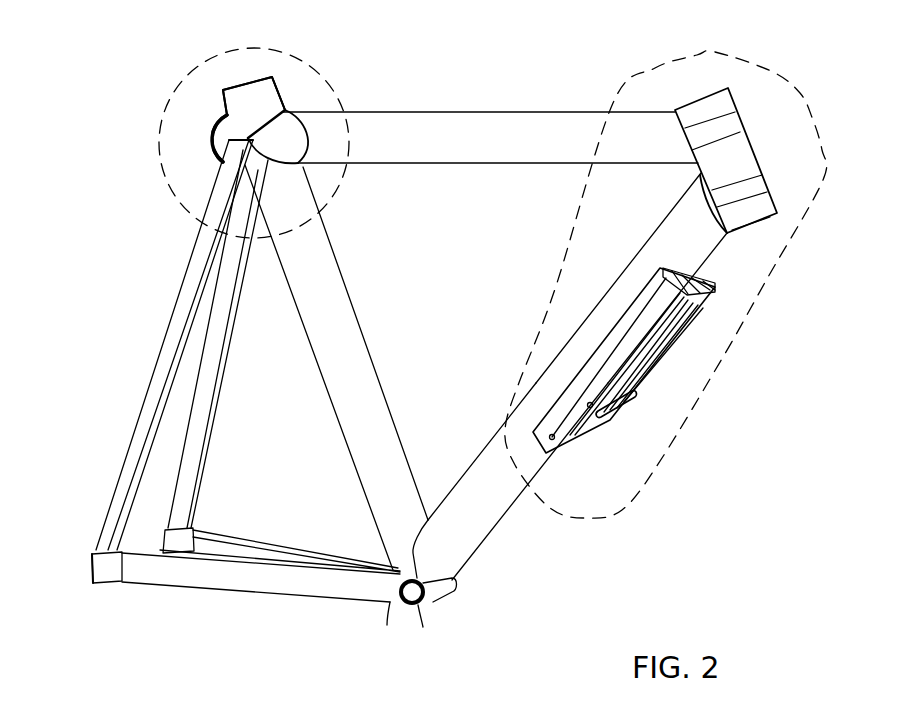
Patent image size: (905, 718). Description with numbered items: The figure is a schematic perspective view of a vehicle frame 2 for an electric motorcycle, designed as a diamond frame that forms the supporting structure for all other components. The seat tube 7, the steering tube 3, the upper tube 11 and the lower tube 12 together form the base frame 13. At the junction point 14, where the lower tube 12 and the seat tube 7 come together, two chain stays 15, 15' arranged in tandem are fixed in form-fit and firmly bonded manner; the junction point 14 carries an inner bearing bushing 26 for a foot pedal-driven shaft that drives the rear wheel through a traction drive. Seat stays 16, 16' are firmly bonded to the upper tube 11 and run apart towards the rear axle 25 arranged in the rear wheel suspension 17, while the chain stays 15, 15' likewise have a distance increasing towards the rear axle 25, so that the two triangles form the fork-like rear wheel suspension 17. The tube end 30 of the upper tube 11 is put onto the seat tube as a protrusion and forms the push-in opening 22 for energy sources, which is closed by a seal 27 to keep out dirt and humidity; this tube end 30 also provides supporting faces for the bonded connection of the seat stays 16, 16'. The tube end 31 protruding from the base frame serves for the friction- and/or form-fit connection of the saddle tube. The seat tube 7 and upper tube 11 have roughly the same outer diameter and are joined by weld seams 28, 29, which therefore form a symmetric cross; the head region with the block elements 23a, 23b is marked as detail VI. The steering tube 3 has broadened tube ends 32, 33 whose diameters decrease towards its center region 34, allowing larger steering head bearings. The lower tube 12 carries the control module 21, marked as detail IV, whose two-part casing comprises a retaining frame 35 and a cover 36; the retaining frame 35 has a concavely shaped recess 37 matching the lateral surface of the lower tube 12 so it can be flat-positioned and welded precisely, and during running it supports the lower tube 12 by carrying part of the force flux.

The frame 2 is at (465, 108).
The steering tube 3 is at (742, 155).
The seat tube 7 is at (365, 352).
The upper tube 11 is at (532, 122).
The lower tube 12 is at (490, 527).
The base frame 13 is at (473, 463).
The junction point 14 is at (395, 597).
The chain stay 15 is at (261, 599).
The chain stay 15' is at (280, 533).
The seat stay 16 is at (174, 345).
The seat stay 16' is at (215, 351).
The rear wheel suspension 17 is at (145, 580).
The control module 21 is at (687, 322).
The push-in opening 22 is at (207, 152).
The head tube bearing block 23a is at (247, 77).
The head tube bearing block 23b is at (254, 96).
The rear axle 25 is at (93, 566).
The inner bearing bushing 26 is at (423, 610).
The seal 27 is at (210, 123).
The weld seam 28 is at (303, 160).
The weld seam 29 is at (290, 165).
The tube end 30 is at (209, 162).
The tube end 31 is at (289, 75).
The tube end 32 is at (726, 100).
The tube end 33 is at (766, 205).
The center region 34 is at (700, 172).
The retaining frame 35 is at (617, 335).
The cover 36 is at (642, 373).
The concavely shaped recess 37 is at (705, 278).
The detail circle VI is at (340, 92).
The detail region IV is at (672, 437).